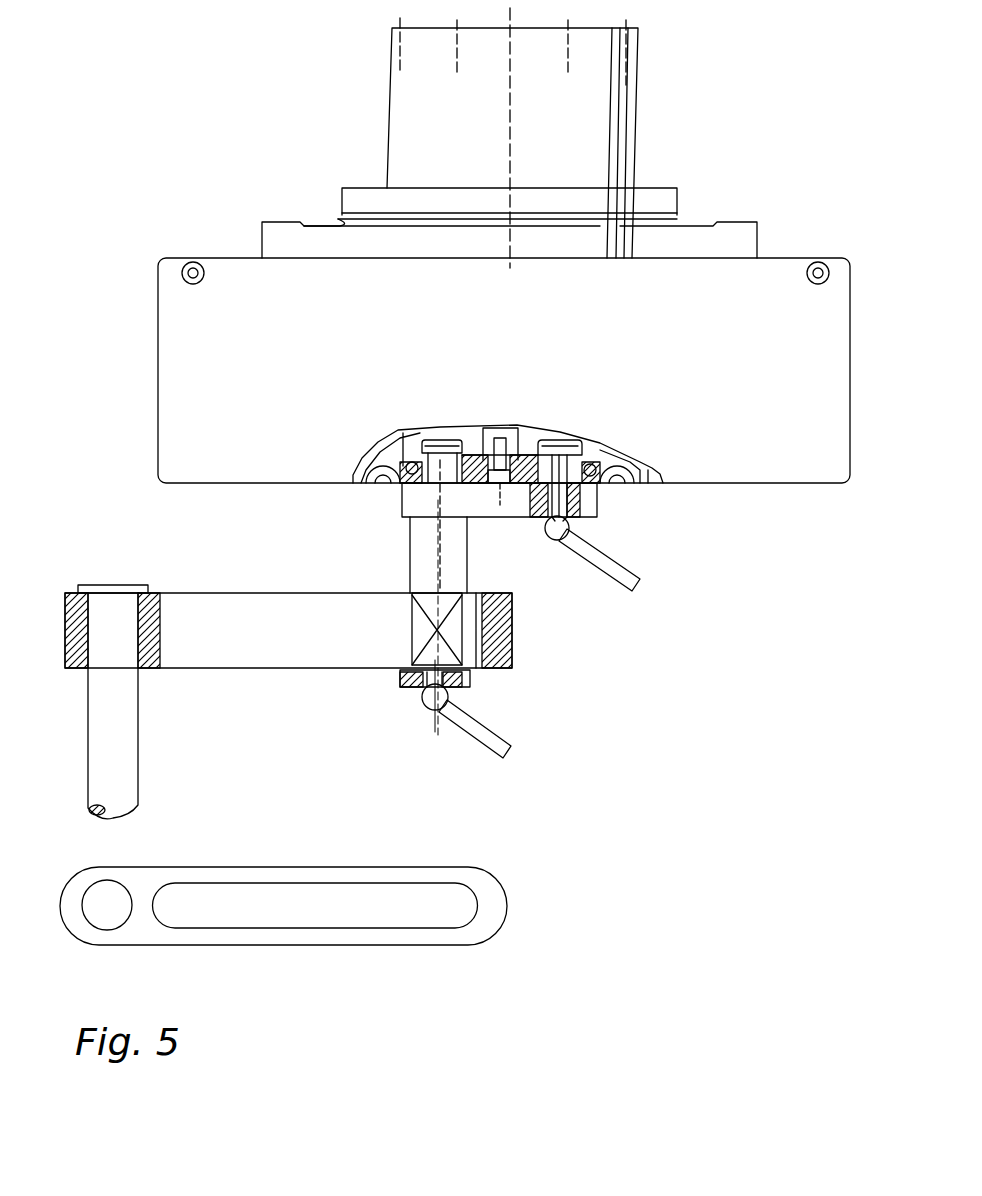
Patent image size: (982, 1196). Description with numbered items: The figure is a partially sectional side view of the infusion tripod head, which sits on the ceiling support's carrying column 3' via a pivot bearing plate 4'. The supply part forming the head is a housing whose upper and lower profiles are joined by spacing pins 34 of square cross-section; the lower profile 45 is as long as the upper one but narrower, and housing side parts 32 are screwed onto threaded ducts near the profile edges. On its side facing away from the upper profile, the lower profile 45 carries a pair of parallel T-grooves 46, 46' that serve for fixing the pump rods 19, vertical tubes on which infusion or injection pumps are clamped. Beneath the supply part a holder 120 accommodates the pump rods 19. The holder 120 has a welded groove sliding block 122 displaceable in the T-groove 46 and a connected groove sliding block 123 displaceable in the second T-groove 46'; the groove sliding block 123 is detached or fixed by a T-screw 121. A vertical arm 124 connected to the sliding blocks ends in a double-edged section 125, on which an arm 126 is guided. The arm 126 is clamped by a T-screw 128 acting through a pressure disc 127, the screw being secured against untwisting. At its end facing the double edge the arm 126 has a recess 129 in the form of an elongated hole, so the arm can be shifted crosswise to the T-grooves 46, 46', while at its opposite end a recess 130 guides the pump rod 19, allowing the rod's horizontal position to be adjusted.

The carrying column 3' is at (478, 138).
The pivot bearing plate 4' is at (501, 201).
The housing side part 32 is at (787, 277).
The spacing pin 34 is at (517, 440).
The T-groove 46 is at (591, 456).
The second T-groove 46' is at (454, 479).
The lower profile 45 is at (398, 486).
The welded groove sliding block 122 is at (432, 490).
The groove sliding block 123 is at (590, 492).
The vertical arm 124 is at (458, 558).
The T-screw 121 is at (633, 583).
The holder 120 is at (523, 565).
The arm 126 is at (160, 593).
The pump rod 19 is at (87, 730).
The double-edged section 125 is at (457, 637).
The pressure disc 127 is at (463, 683).
The T-screw 128 is at (500, 752).
The recess 130 is at (117, 887).
The recess 129 is at (427, 887).